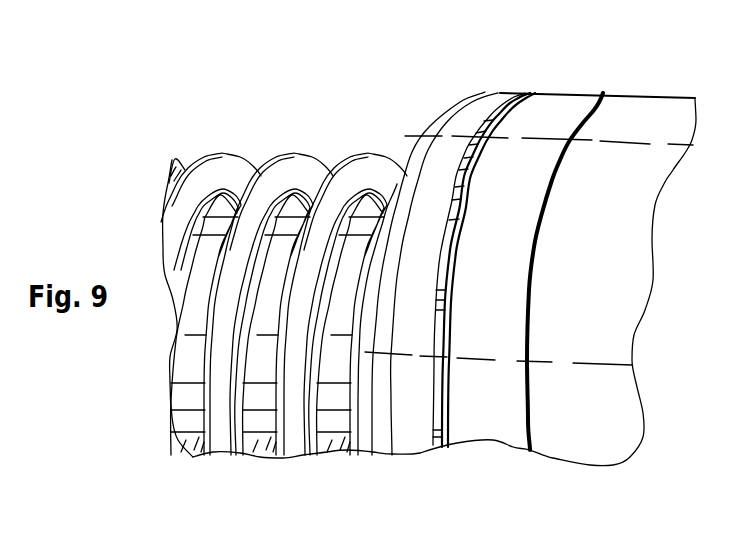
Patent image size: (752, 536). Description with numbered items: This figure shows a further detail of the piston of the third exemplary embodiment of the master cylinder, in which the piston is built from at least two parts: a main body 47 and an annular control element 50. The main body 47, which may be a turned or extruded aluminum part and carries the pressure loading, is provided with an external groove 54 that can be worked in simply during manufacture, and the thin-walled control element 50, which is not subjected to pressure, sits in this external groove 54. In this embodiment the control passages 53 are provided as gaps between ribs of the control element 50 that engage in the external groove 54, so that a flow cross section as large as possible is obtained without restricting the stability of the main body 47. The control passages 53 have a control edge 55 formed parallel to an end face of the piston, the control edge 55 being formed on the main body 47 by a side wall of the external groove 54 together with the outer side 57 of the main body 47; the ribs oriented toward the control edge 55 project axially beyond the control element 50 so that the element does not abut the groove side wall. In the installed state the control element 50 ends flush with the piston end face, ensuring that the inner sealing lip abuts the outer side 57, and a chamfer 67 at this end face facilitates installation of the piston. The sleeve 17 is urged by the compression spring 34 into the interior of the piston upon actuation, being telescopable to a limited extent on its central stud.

The sleeve 17 is at (258, 398).
The compression spring 34 is at (220, 357).
The main body 47 is at (643, 123).
The annular control element 50 is at (477, 103).
The control passages 53 is at (458, 222).
The external groove 54 is at (445, 390).
The control edge 55 is at (461, 205).
The outer side of the main body 57 is at (603, 93).
The chamfer 67 is at (382, 397).